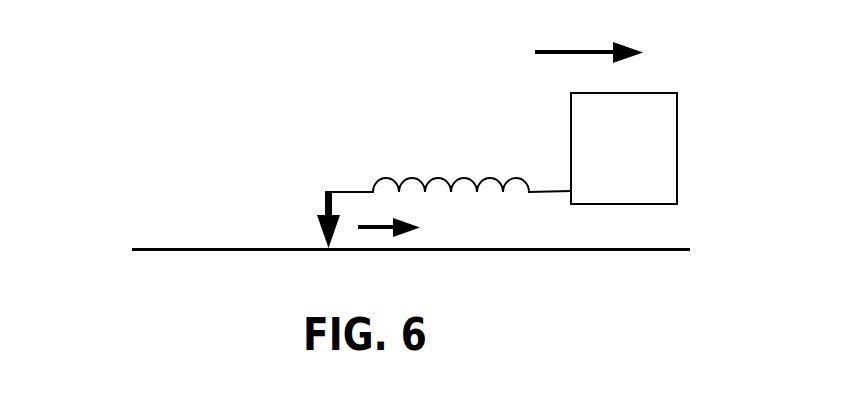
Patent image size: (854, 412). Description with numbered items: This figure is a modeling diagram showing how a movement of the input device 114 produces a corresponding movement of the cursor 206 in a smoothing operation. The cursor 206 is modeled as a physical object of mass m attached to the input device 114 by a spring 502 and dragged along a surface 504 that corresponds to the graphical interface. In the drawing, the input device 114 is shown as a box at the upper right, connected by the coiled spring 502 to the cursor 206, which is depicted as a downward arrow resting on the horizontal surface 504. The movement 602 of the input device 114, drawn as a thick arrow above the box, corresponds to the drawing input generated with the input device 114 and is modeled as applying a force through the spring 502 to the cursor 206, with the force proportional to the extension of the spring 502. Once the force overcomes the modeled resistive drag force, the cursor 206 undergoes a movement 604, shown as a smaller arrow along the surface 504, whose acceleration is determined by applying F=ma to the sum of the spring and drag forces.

The input device 114 is at (642, 186).
The cursor 206 is at (307, 198).
The spring 502 is at (413, 168).
The surface 504 is at (133, 247).
The movement of the input device 602 is at (638, 24).
The movement of the cursor 604 is at (413, 205).